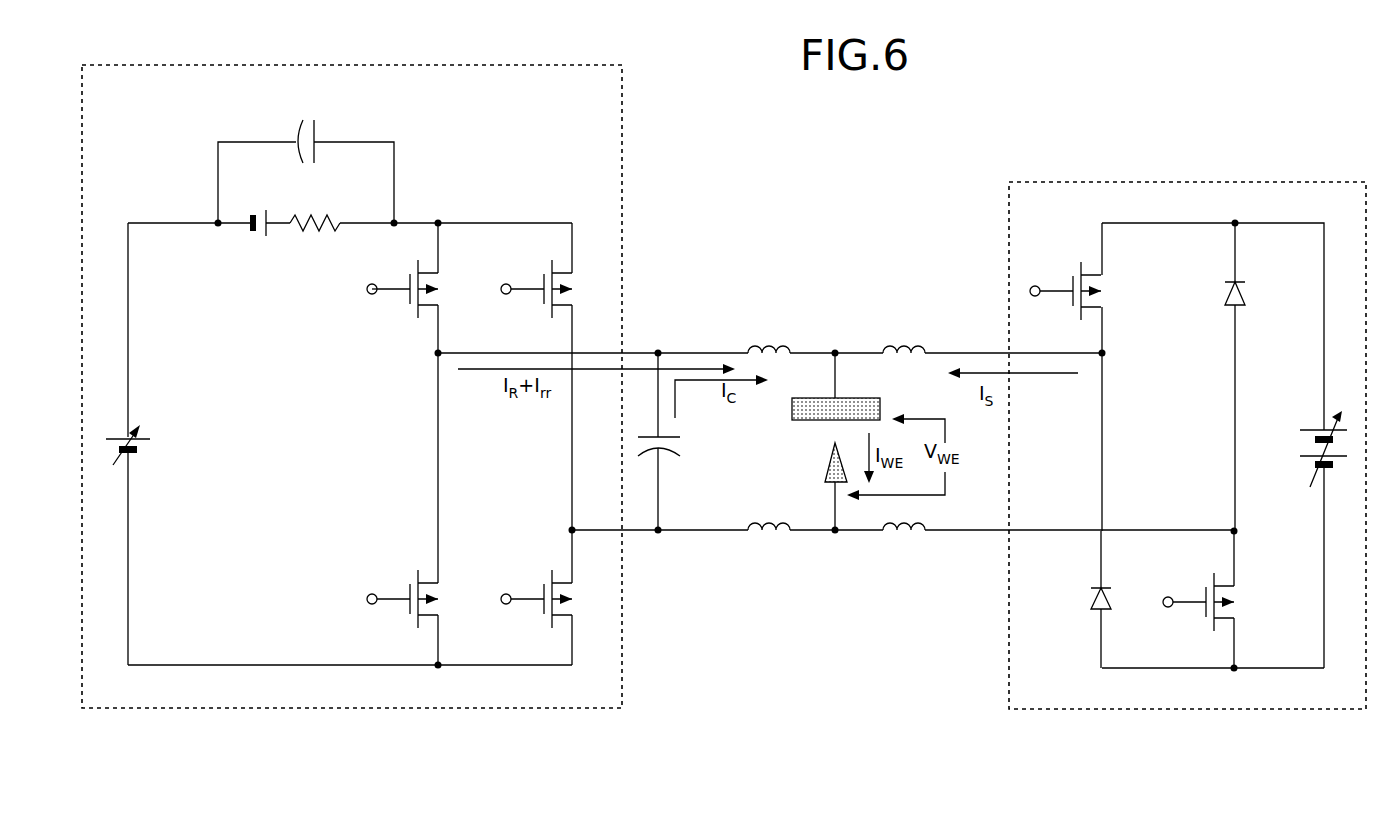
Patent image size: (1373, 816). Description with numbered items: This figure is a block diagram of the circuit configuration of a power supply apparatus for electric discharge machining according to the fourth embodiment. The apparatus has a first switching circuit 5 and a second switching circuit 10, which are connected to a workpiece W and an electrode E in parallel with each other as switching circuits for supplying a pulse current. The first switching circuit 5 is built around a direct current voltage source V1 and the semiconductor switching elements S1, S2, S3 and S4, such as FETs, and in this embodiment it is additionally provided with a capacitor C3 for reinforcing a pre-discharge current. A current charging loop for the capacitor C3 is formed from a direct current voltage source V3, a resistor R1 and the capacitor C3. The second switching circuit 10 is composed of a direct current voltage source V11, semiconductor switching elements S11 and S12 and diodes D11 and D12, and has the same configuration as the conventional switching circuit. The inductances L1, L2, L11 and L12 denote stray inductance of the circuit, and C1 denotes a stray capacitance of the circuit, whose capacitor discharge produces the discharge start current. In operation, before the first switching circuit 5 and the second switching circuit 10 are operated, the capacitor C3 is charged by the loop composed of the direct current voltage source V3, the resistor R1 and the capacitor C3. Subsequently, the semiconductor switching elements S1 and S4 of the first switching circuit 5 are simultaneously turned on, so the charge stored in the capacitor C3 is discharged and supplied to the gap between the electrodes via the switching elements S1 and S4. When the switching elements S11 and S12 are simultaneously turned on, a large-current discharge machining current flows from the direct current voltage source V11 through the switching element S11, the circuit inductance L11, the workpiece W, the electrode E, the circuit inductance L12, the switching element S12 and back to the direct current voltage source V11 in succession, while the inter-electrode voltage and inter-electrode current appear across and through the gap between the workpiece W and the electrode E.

The first switching circuit 5 is at (623, 252).
The second switching circuit 10 is at (1008, 227).
The capacitor C3 is at (316, 121).
The direct current voltage source V3 is at (266, 240).
The resistor R1 is at (315, 235).
The direct current voltage source V1 is at (141, 432).
The semiconductor switching element S1 is at (435, 283).
The semiconductor switching element S2 is at (435, 593).
The semiconductor switching element S3 is at (569, 283).
The semiconductor switching element S4 is at (569, 593).
The stray capacitance C1 is at (682, 441).
The stray inductance L1 is at (778, 340).
The stray inductance L2 is at (767, 538).
The circuit inductance L11 is at (910, 340).
The circuit inductance L12 is at (902, 538).
The workpiece W is at (880, 408).
The electrode E is at (828, 464).
The semiconductor switching element S11 is at (1098, 283).
The semiconductor switching element S12 is at (1232, 596).
The diode D11 is at (1246, 286).
The diode D12 is at (1112, 593).
The direct current voltage source V11 is at (1308, 445).